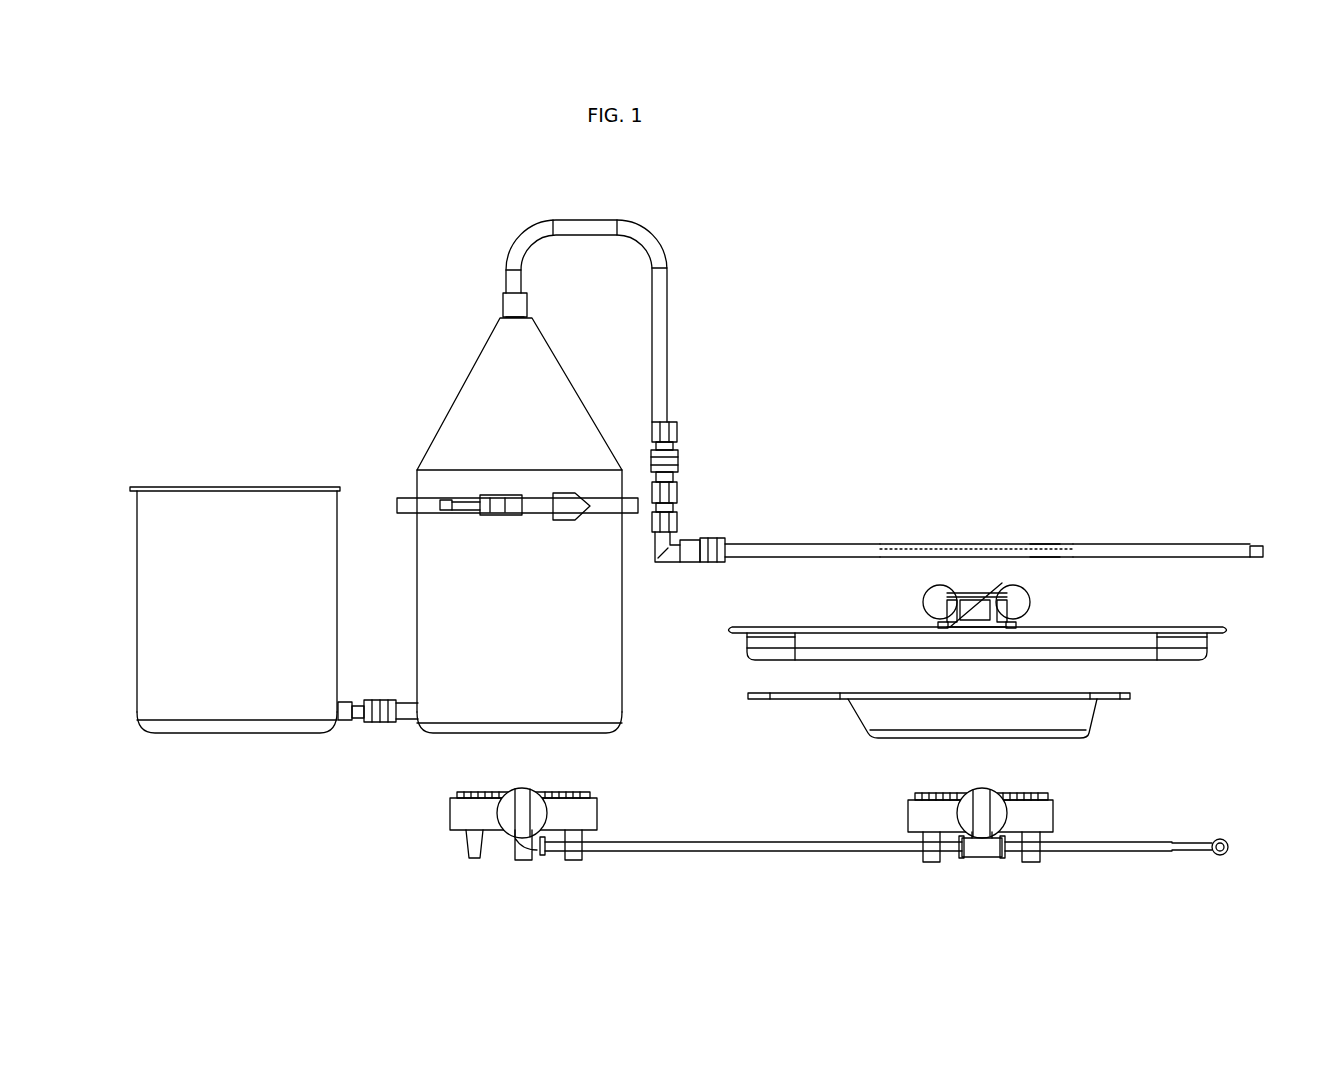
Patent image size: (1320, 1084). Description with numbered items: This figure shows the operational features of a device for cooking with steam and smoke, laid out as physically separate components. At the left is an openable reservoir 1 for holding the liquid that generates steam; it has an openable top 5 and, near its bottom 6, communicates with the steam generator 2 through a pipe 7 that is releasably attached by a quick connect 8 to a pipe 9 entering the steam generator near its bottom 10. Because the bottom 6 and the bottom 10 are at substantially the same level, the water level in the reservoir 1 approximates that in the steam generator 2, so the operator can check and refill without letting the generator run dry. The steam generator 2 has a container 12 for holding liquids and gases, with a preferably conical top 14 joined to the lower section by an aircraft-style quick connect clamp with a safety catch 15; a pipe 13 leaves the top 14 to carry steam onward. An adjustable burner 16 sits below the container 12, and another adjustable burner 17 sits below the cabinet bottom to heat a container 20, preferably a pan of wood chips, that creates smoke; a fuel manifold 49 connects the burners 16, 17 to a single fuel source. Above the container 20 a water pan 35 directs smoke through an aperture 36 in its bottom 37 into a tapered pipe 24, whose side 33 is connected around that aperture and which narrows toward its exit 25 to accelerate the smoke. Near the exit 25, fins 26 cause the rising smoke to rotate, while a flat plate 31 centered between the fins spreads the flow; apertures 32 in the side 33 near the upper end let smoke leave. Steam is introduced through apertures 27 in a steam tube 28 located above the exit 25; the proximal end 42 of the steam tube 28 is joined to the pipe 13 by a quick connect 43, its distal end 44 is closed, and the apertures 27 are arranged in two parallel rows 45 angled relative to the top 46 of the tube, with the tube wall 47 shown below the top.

The reservoir 1 is at (215, 707).
The steam generator 2 is at (437, 590).
The openable top 5 is at (197, 488).
The bottom of the reservoir 6 is at (275, 737).
The pipe 7 is at (350, 728).
The quick connect 8 is at (381, 725).
The pipe 9 is at (403, 707).
The bottom of the steam generator 10 is at (508, 738).
The container 12 is at (458, 420).
The pipe 13 is at (577, 225).
The top of the container 14 is at (497, 318).
The quick connect clamp with safety catch 15 is at (410, 504).
The burner 16 is at (466, 812).
The burner 17 is at (919, 815).
The container 20 is at (873, 714).
The tapered pipe 24 is at (928, 622).
The exit 25 is at (1012, 620).
The fins 26 is at (935, 595).
The apertures 27 is at (978, 540).
The steam tube 28 is at (833, 550).
The flat plate 31 is at (975, 605).
The apertures 32 is at (1005, 615).
The side 33 is at (948, 610).
The water pan 35 is at (757, 640).
The aperture 36 is at (972, 656).
The bottom of the water pan 37 is at (1141, 661).
The proximal end 42 is at (744, 549).
The quick connect 43 is at (683, 462).
The distal end 44 is at (1254, 558).
The rows 45 is at (1043, 547).
The top of the steam tube 46 is at (1130, 545).
The tube lower wall 47 is at (1144, 559).
The fuel manifold 49 is at (717, 842).